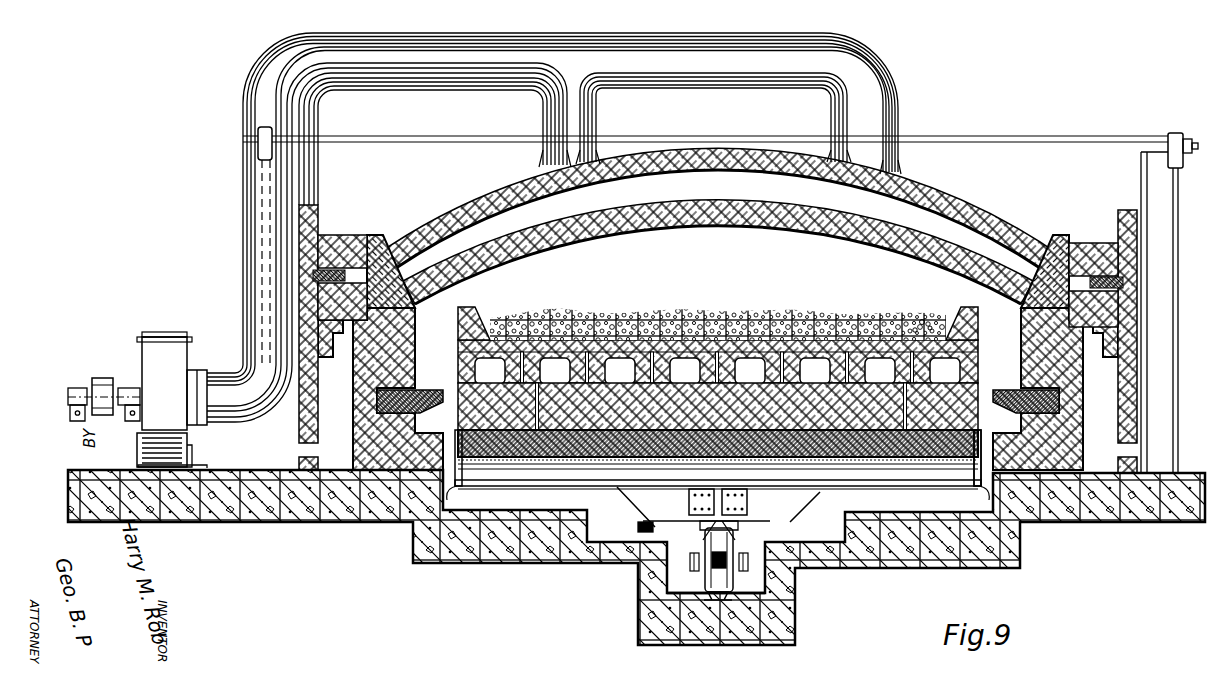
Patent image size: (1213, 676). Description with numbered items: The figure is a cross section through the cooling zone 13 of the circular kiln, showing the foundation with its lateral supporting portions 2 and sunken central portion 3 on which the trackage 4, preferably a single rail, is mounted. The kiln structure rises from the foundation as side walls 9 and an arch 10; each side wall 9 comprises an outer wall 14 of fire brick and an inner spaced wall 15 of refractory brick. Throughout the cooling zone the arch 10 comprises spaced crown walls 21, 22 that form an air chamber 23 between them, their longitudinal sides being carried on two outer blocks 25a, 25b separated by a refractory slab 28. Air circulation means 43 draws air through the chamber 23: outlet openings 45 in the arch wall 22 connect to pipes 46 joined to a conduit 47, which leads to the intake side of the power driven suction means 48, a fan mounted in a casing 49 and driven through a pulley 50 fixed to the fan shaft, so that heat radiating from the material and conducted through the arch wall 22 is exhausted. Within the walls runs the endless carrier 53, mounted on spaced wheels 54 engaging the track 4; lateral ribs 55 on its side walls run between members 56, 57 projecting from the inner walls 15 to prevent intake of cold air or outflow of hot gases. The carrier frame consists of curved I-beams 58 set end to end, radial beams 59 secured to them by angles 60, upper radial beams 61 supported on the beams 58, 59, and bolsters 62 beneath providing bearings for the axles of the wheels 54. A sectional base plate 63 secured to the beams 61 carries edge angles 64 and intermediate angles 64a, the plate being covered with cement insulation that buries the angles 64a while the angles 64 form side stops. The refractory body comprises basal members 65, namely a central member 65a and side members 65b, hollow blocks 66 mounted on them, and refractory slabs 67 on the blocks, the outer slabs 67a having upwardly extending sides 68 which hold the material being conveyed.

The lateral supporting portions 2 is at (316, 522).
The sunken central portion 3 is at (741, 603).
The trackage 4 is at (731, 590).
The side walls 9 is at (720, 303).
The arch 10 is at (718, 216).
The cooling zone 13 is at (718, 327).
The outer wall 14 is at (312, 380).
The inner spaced wall 15 is at (403, 335).
The crown wall 21 is at (690, 229).
The arch wall 22 is at (776, 175).
The air chamber 23 is at (541, 219).
The outer block 25a is at (1090, 328).
The outer block 25b is at (1097, 251).
The refractory slab 28 is at (1123, 281).
The air circulation means 43 is at (550, 222).
The outlet openings 45 is at (584, 178).
The pipes 46 is at (583, 119).
The conduit 47 is at (735, 75).
The suction means 48 is at (162, 400).
The casing 49 is at (176, 359).
The pulley 50 is at (100, 378).
The endless carrier 53 is at (732, 522).
The wheels 54 is at (711, 576).
The lateral ribs 55 is at (440, 418).
The projecting member 56 is at (455, 487).
The projecting member 57 is at (422, 391).
The curved I-beams 58 is at (712, 484).
The radial beams 59 is at (634, 502).
The angles 60 is at (687, 500).
The upper radial beams 61 is at (920, 478).
The bolsters 62 is at (744, 534).
The base plate 63 is at (942, 481).
The angles 64 is at (455, 458).
The intermediate angles 64a is at (612, 457).
The basal members 65 is at (560, 467).
The central member 65a is at (737, 400).
The side members 65b is at (497, 425).
The hollow blocks 66 is at (540, 345).
The refractory plates or slabs 67 is at (699, 330).
The outer slabs 67a is at (920, 333).
The upwardly extending sides 68 is at (460, 312).